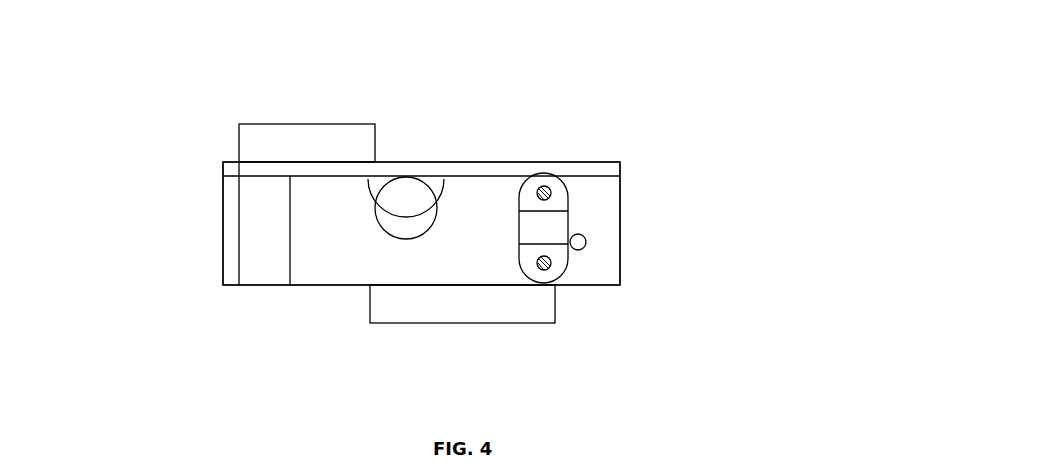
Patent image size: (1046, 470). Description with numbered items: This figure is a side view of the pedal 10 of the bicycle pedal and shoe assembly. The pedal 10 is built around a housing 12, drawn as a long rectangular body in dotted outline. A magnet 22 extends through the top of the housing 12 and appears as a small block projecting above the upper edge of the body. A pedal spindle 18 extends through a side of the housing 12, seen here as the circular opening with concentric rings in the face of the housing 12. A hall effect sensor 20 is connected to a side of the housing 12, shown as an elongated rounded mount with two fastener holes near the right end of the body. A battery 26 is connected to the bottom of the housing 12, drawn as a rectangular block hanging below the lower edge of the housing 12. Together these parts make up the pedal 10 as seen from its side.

The pedal 10 is at (792, 173).
The housing 12 is at (178, 238).
The pedal spindle 18 is at (405, 203).
The hall effect sensor 20 is at (558, 221).
The magnet 22 is at (239, 140).
The battery 26 is at (556, 318).